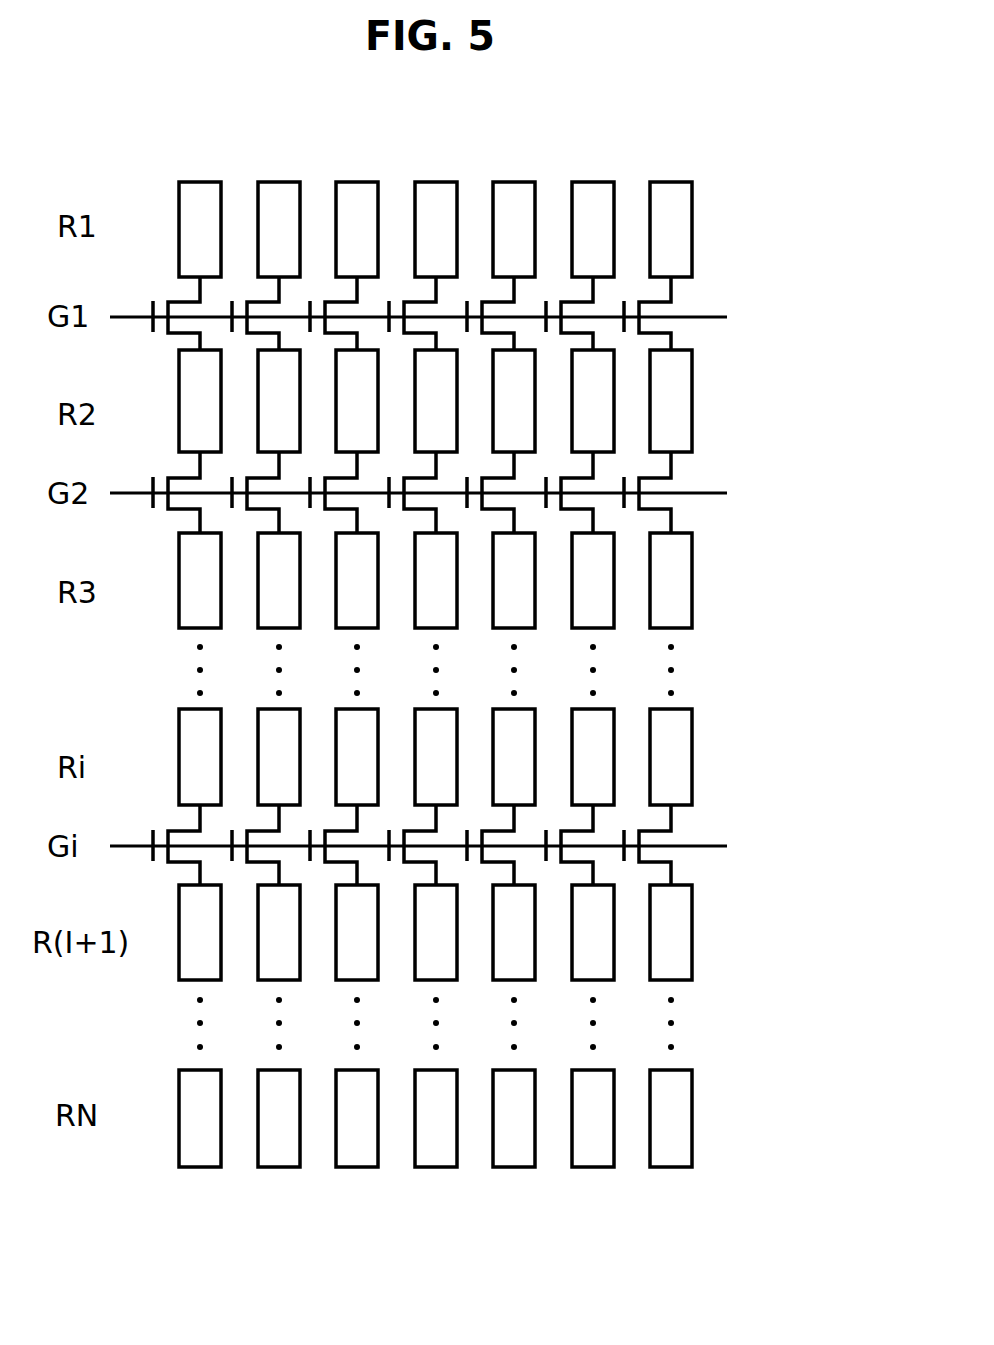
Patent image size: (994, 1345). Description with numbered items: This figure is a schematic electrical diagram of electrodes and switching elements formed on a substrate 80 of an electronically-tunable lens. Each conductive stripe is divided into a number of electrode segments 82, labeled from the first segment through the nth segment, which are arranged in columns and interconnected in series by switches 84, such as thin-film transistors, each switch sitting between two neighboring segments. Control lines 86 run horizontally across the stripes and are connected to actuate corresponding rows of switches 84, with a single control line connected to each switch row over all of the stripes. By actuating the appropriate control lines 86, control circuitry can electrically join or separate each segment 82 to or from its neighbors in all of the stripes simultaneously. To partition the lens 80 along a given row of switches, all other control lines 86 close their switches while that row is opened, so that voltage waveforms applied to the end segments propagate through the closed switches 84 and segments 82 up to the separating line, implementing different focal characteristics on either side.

The substrate 80 is at (761, 135).
The electrode segments 82 is at (440, 182).
The switches 84 is at (265, 301).
The control lines 86 is at (714, 318).